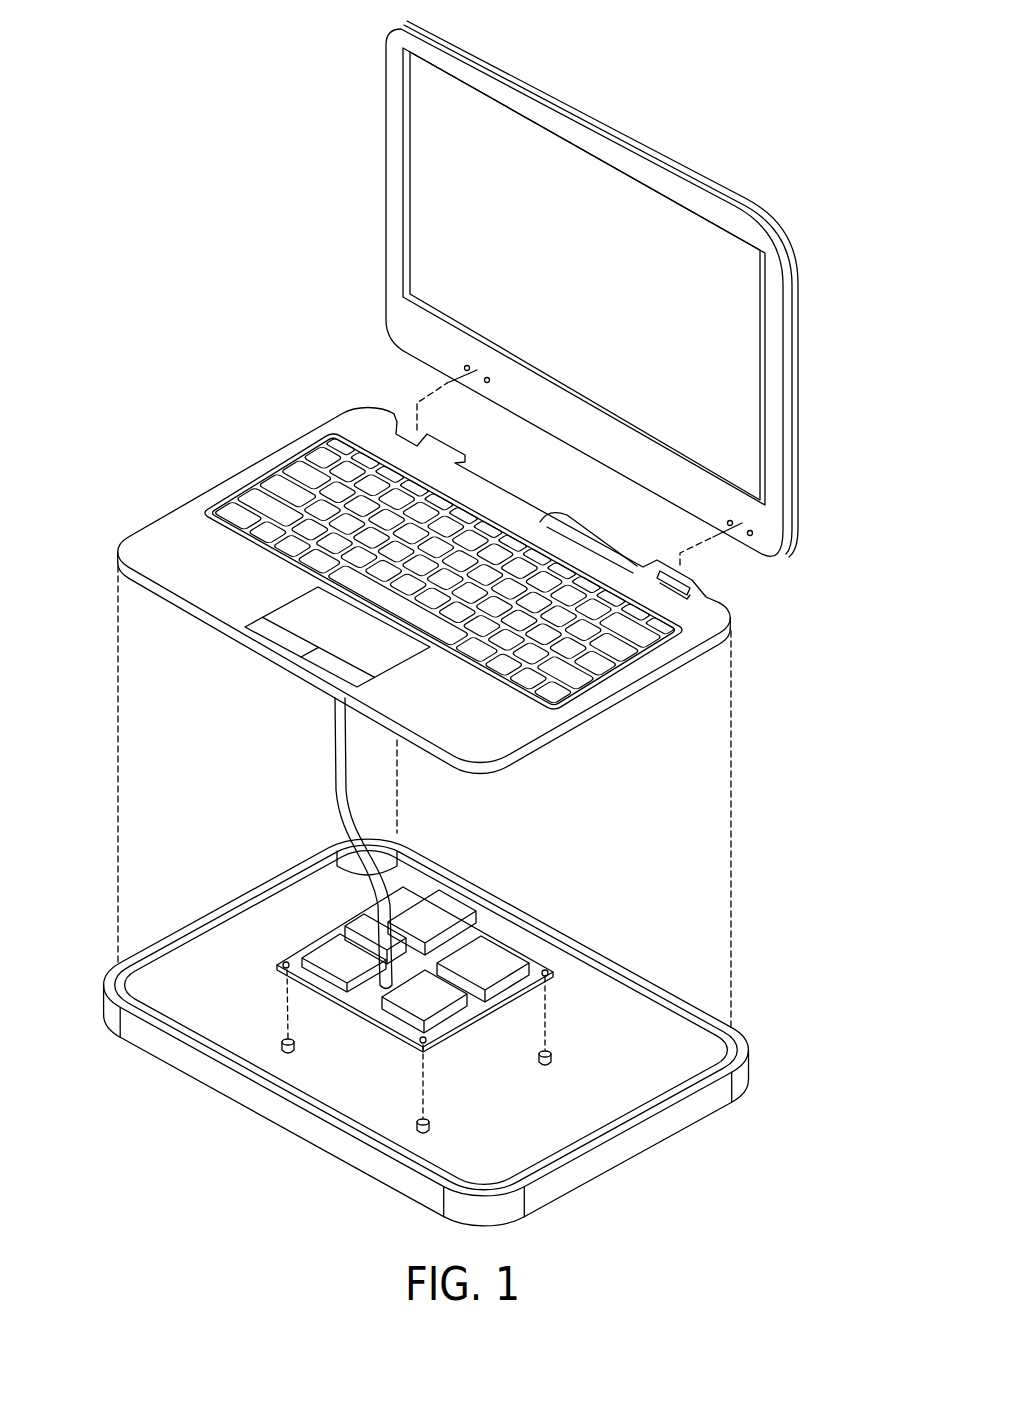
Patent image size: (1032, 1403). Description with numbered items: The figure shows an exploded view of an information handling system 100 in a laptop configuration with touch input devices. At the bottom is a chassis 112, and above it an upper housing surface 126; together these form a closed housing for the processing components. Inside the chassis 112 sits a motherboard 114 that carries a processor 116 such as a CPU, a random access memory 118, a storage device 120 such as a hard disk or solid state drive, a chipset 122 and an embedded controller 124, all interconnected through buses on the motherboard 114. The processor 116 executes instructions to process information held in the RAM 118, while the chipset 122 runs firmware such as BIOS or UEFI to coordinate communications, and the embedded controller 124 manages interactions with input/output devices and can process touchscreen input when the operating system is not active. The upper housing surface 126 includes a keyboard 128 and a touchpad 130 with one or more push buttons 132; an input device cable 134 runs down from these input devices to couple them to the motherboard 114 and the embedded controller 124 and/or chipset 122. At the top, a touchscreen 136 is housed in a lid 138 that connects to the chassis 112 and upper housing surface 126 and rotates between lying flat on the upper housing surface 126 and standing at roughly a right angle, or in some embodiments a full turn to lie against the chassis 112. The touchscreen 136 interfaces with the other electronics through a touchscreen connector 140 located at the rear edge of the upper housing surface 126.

The information handling system 100 is at (198, 161).
The chassis 112 is at (426, 1032).
The motherboard 114 is at (440, 1012).
The processor 116 is at (515, 900).
The random access memory 118 is at (349, 876).
The storage device 120 is at (285, 904).
The chipset 122 is at (570, 950).
The embedded controller 124 is at (347, 1097).
The upper housing surface 126 is at (424, 659).
The keyboard 128 is at (431, 550).
The touchpad 130 is at (371, 655).
The push buttons 132 is at (286, 685).
The input device cable 134 is at (438, 843).
The touchscreen 136 is at (612, 276).
The lid 138 is at (592, 293).
The touchscreen connector 140 is at (773, 652).